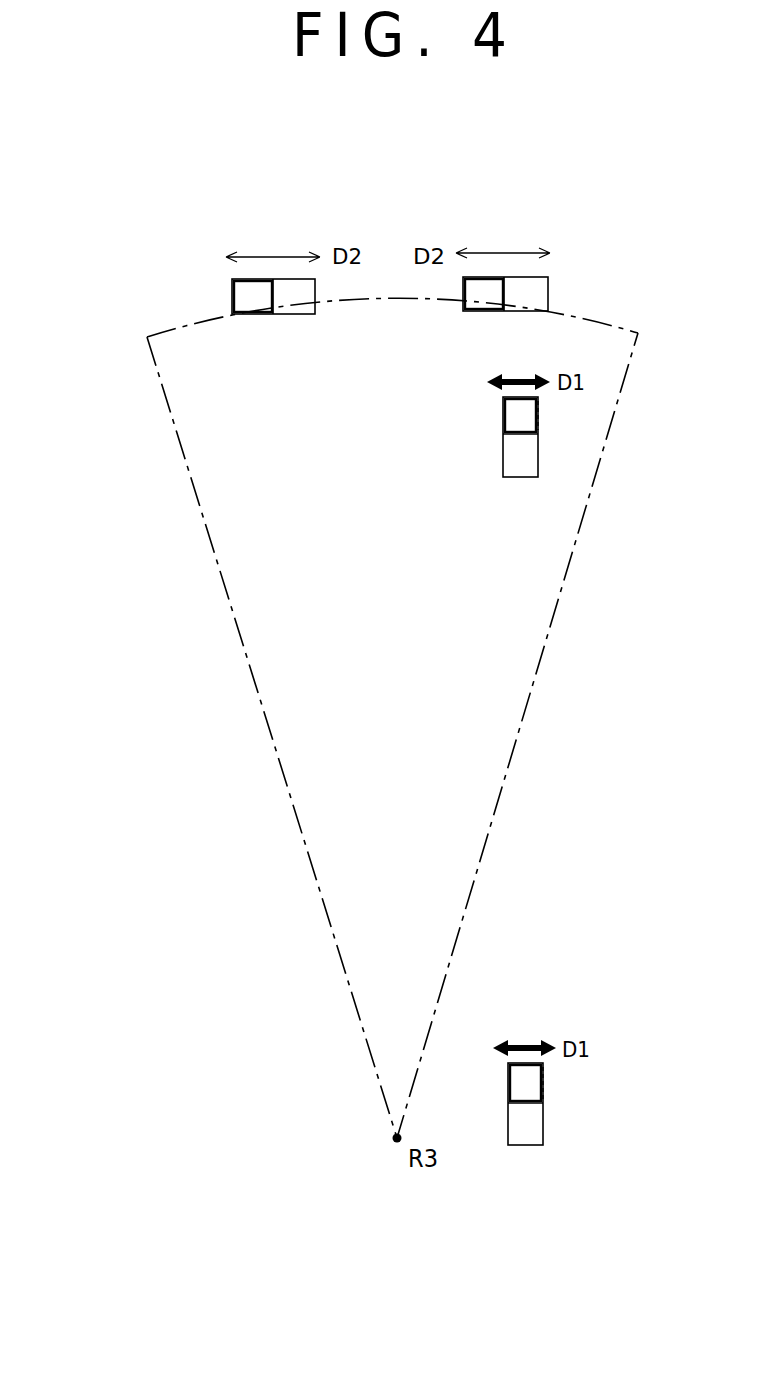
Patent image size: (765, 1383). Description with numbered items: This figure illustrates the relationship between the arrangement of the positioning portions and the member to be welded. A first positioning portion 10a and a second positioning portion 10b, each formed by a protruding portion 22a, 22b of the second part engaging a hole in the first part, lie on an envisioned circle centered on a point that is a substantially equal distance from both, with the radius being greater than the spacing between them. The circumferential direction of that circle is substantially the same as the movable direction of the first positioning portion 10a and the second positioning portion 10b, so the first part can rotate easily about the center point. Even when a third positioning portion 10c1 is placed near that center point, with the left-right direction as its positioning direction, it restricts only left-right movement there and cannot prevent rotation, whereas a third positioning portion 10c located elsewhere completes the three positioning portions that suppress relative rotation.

The first positioning portion 10a is at (221, 293).
The second positioning portion 10b is at (558, 288).
The third positioning portion 10c is at (498, 456).
The third positioning portion 10c1 is at (555, 1127).
The protruding portion 22a is at (274, 297).
The protruding portion 22b is at (505, 296).